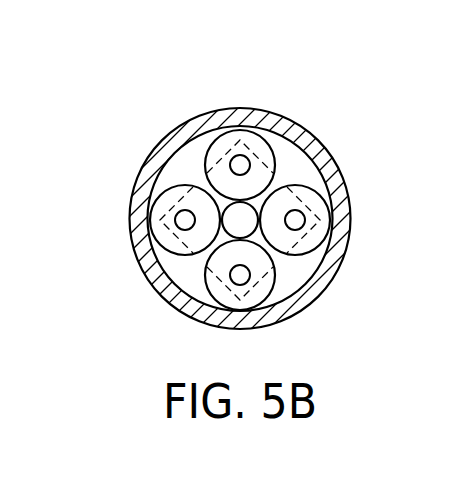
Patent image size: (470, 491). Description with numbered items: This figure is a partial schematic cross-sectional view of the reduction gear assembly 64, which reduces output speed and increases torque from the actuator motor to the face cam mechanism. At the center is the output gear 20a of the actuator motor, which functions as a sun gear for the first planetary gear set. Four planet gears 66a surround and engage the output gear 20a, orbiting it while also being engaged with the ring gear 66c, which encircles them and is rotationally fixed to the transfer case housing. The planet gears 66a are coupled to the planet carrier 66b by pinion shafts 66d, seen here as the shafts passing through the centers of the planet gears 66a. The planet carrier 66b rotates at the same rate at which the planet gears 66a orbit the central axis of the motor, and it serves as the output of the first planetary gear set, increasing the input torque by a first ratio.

The reduction gear assembly 64 is at (114, 85).
The output gear 20a is at (238, 200).
The planet gears 66a is at (348, 183).
The planet carrier 66b is at (340, 235).
The ring gear 66c is at (340, 282).
The pinion shafts 66d is at (340, 197).